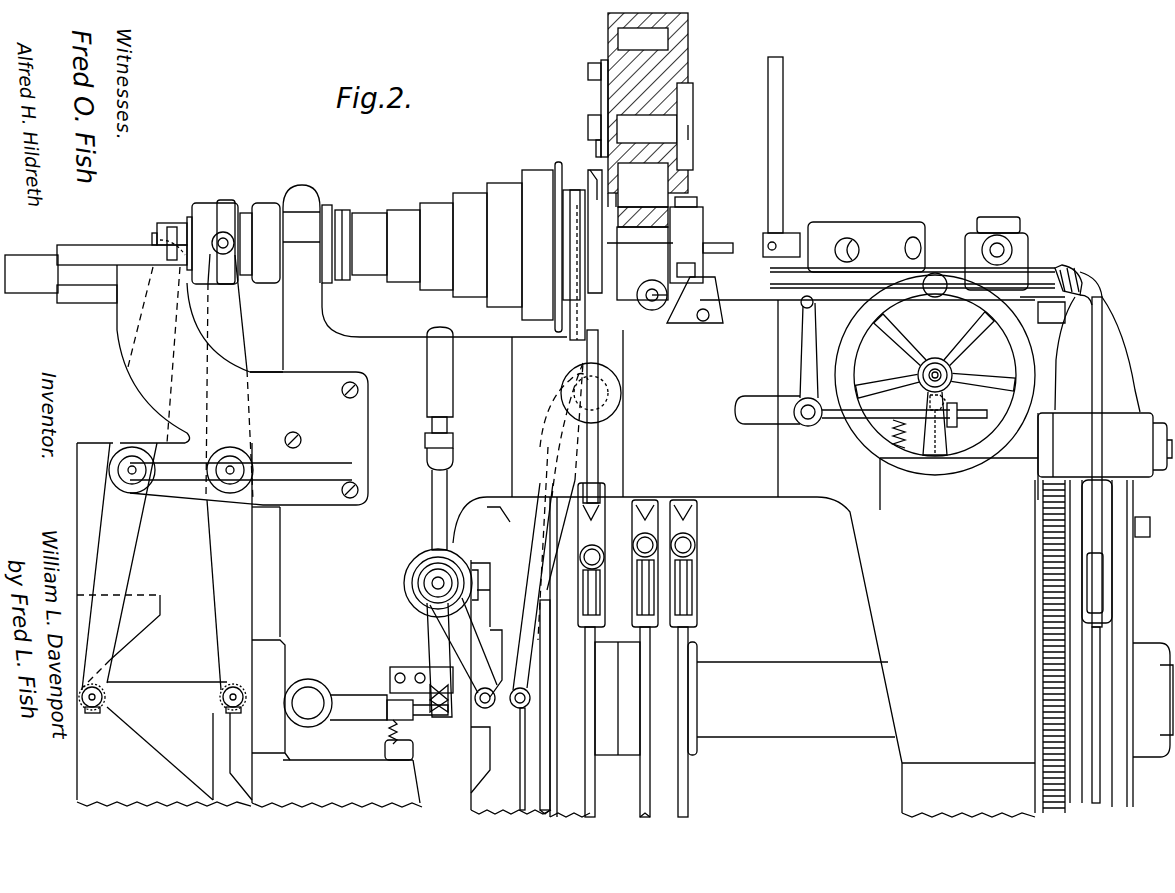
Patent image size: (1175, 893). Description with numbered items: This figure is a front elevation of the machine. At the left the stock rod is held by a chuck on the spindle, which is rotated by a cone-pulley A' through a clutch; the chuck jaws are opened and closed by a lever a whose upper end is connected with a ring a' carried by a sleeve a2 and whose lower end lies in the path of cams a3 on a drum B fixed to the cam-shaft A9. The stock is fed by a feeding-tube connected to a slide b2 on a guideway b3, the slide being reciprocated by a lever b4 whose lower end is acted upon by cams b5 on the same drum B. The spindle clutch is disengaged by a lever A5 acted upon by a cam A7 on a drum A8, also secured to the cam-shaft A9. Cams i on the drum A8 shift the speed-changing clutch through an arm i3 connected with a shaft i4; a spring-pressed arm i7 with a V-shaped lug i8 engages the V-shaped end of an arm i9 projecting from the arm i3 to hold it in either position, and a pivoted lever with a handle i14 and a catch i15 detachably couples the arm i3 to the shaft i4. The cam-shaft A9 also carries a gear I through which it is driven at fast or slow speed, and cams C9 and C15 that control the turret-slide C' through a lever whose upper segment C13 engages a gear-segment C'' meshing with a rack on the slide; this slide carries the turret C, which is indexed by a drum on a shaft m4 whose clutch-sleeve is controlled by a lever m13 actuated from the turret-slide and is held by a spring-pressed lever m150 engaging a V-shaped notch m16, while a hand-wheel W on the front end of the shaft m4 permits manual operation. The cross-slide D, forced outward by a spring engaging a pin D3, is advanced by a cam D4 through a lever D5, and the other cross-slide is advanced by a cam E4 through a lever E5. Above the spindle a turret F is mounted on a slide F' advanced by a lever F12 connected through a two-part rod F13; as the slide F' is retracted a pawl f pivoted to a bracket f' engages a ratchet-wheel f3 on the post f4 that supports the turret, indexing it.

The cone-pulley A' is at (451, 247).
The sleeve a2 is at (203, 208).
The ring a' is at (235, 223).
The lever a is at (211, 472).
The cams a3 is at (222, 690).
The slide b2 is at (90, 296).
The guideway b3 is at (38, 285).
The lever b4 is at (122, 410).
The cams b5 is at (150, 632).
The drum B is at (77, 520).
The cams i is at (495, 515).
The arm i3 is at (446, 617).
The shaft i4 is at (432, 585).
The spring-pressed arm i7 is at (360, 715).
The V-shaped lug i8 is at (425, 689).
The arm i9 is at (428, 643).
The handle i14 is at (453, 378).
The catch i15 is at (450, 428).
The lever A5 is at (563, 501).
The cam A7 is at (530, 540).
The drum A8 is at (520, 776).
The cam-shaft A9 is at (750, 745).
The pawl f is at (582, 108).
The bracket f' is at (574, 58).
The ratchet-wheel f3 is at (603, 145).
The post or stud f4 is at (668, 140).
The turret F is at (697, 126).
The slide F' is at (666, 120).
The lever F12 is at (600, 512).
The rod F13 is at (600, 448).
The cross-slide D is at (698, 302).
The pin D3 is at (655, 305).
The cam D4 is at (688, 640).
The lever D5 is at (695, 530).
The cam E4 is at (650, 672).
The lever E5 is at (650, 512).
The turret C is at (866, 232).
The turret-slide C' is at (877, 288).
The gear-segment C'' is at (1070, 422).
The cam C9 is at (1100, 690).
The segment C13 is at (1083, 280).
The cam C15 is at (1130, 600).
The gear I is at (1043, 592).
The hand-wheel W is at (988, 460).
The shaft m4 is at (802, 306).
The lever m13 is at (812, 350).
The V-shaped notch m16 is at (950, 395).
The spring-pressed lever m150 is at (815, 418).